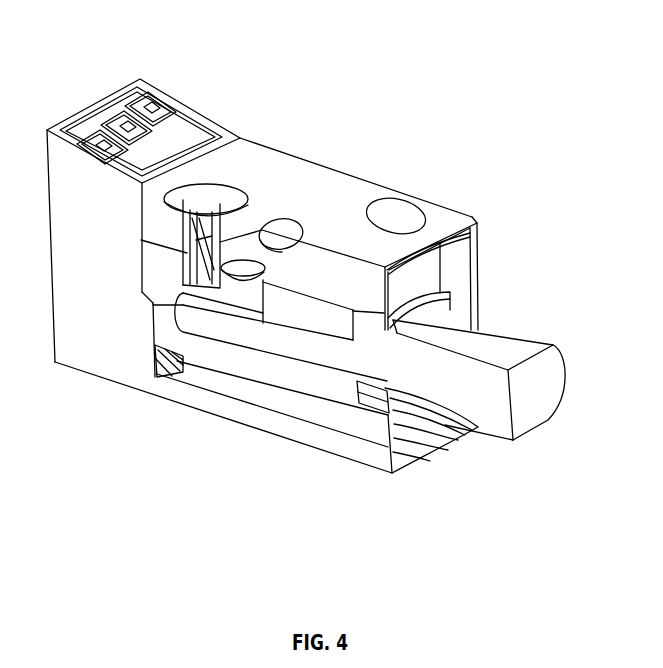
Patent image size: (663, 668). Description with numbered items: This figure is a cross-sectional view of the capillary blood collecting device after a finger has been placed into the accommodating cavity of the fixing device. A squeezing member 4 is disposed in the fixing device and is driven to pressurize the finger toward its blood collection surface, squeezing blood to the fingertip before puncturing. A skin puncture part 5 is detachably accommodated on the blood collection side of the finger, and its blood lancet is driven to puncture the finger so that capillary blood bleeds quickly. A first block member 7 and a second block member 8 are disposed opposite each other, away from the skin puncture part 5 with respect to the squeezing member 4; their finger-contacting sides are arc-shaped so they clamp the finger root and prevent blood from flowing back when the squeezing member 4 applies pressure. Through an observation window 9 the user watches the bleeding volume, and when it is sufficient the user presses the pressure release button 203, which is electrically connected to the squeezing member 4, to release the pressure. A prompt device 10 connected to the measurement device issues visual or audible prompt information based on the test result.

The prompt device 10 is at (208, 122).
The skin puncture part 5 is at (203, 233).
The observation window 9 is at (290, 240).
The pressure release button 203 is at (397, 217).
The squeezing member 4 is at (300, 310).
The first block member 7 is at (377, 407).
The second block member 8 is at (368, 325).